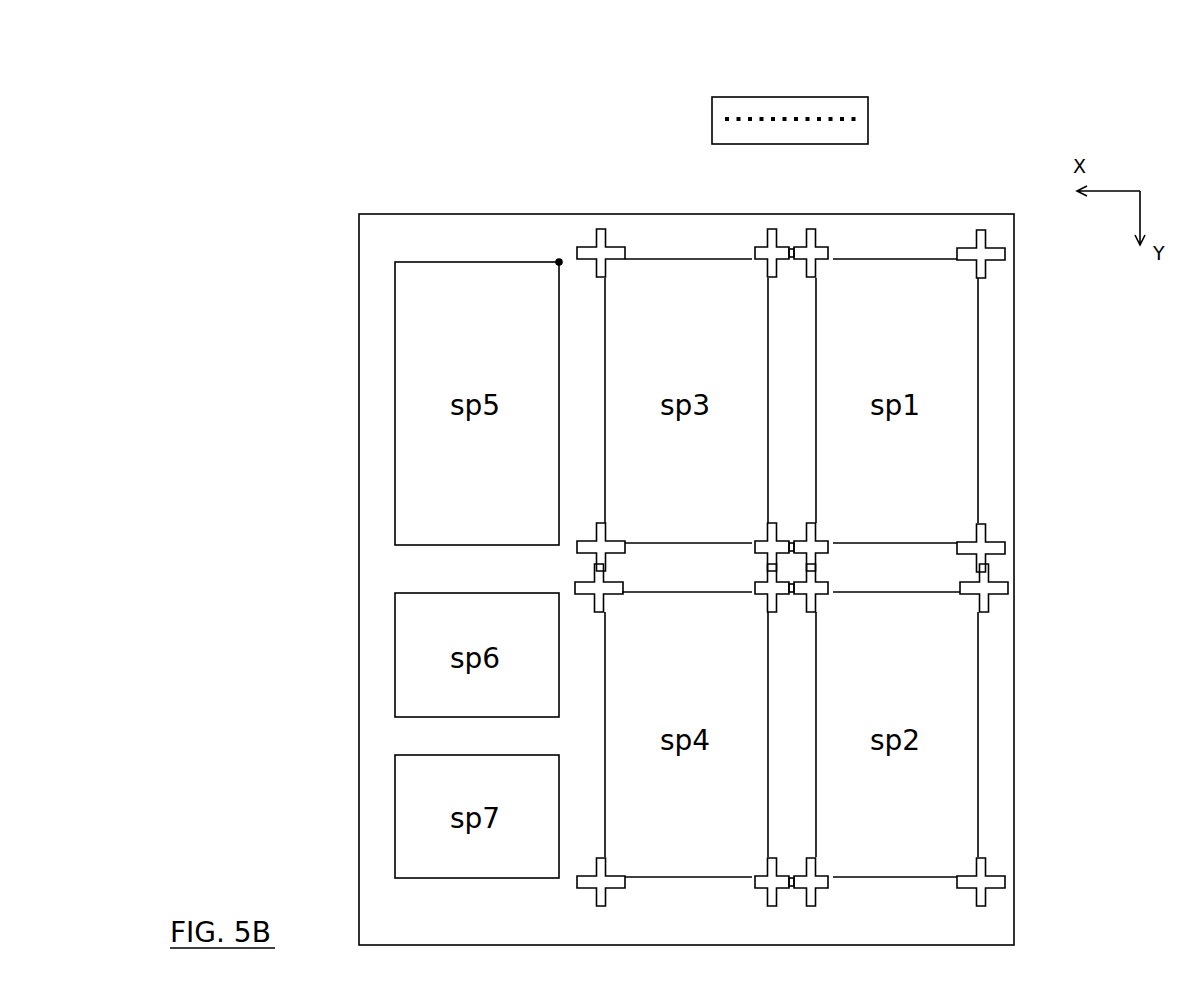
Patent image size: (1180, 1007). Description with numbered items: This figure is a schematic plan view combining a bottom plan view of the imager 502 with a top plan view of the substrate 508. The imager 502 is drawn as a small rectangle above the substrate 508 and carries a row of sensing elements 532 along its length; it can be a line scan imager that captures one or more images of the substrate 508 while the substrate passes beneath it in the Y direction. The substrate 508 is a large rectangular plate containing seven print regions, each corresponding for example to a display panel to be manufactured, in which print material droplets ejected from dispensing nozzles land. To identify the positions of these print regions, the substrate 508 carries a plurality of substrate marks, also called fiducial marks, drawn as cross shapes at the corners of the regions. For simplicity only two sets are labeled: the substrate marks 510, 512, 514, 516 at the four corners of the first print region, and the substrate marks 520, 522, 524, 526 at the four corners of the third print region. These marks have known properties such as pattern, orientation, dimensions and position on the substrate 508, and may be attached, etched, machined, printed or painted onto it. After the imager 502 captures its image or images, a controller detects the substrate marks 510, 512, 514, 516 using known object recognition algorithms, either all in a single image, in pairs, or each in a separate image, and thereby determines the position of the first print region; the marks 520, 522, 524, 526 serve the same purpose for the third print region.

The imager 502 is at (712, 127).
The sensing elements 532 is at (740, 118).
The substrate 508 is at (359, 226).
The substrate mark 510 is at (980, 230).
The substrate mark 512 is at (997, 541).
The substrate mark 514 is at (817, 543).
The substrate mark 516 is at (807, 230).
The substrate mark 520 is at (770, 230).
The substrate mark 522 is at (770, 527).
The substrate mark 524 is at (602, 537).
The substrate mark 526 is at (600, 230).